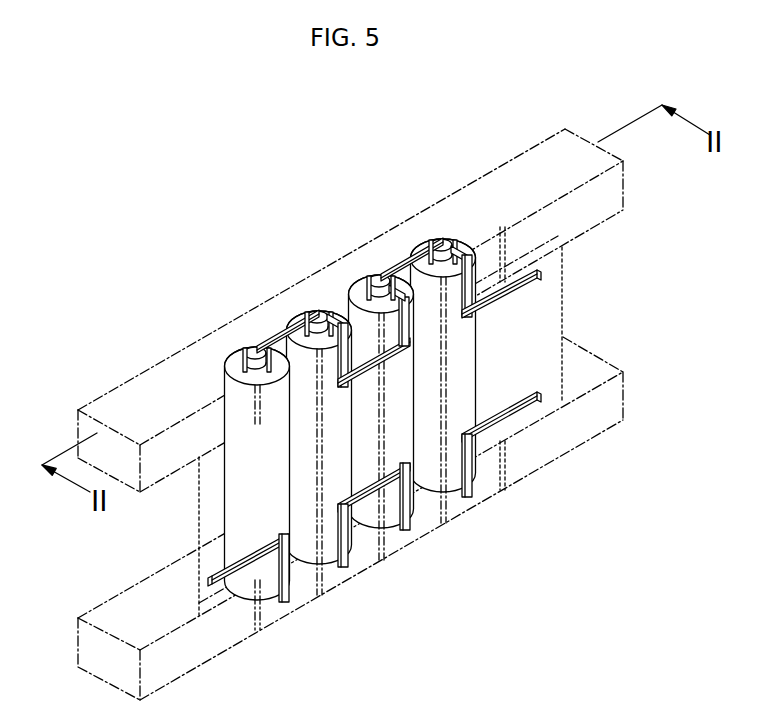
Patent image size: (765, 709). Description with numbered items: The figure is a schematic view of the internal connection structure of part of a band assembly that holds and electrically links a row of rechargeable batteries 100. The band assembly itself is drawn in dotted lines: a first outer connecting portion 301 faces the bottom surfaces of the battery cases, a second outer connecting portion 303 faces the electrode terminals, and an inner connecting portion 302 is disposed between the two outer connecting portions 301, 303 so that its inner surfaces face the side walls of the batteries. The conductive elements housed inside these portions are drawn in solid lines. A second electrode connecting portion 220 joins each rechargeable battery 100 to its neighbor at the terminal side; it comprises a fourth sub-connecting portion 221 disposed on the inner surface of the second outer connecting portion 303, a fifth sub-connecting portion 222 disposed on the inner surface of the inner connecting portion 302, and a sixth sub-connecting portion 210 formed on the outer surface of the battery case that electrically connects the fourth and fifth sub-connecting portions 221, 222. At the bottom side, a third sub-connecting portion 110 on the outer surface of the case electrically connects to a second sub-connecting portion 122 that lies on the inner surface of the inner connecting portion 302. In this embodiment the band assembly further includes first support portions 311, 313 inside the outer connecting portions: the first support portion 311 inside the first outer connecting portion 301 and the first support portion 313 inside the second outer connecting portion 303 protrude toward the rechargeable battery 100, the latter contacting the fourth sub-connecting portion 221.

The rechargeable battery 100 is at (237, 505).
The third sub-connecting portion 110 is at (350, 513).
The second sub-connecting portion 122 is at (523, 415).
The sixth sub-connecting portion 210 is at (363, 297).
The second electrode connecting portion 220 is at (454, 217).
The fourth sub-connecting portion 221 is at (393, 268).
The fifth sub-connecting portion 222 is at (513, 277).
The first outer connecting portion 301 is at (615, 400).
The inner connecting portion 302 is at (555, 320).
The second outer connecting portion 303 is at (615, 188).
The first support portion 311 is at (425, 505).
The first support portion 313 is at (270, 330).